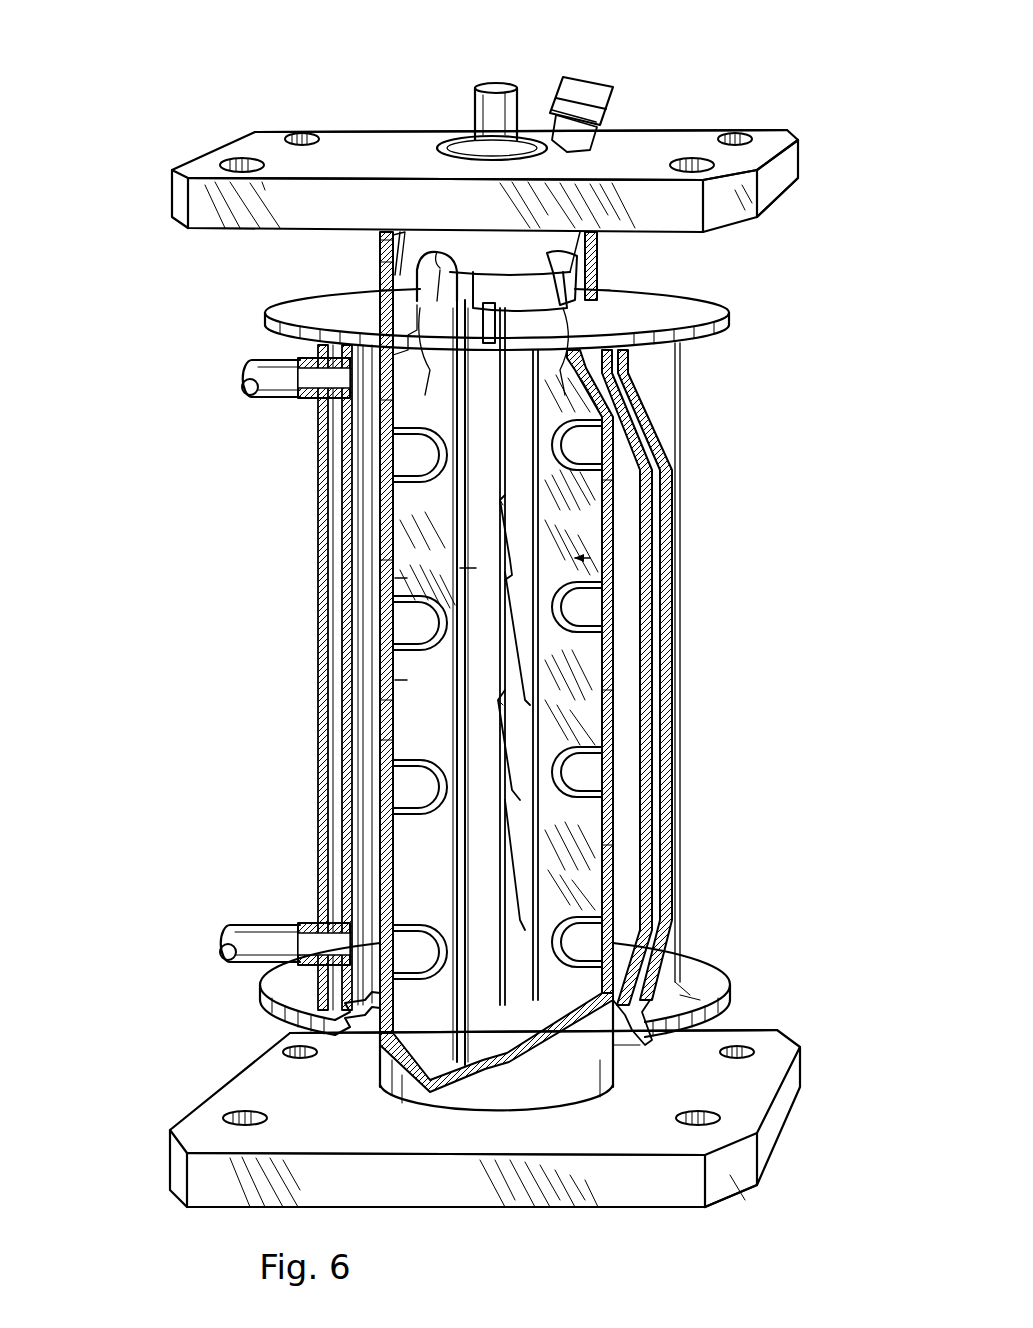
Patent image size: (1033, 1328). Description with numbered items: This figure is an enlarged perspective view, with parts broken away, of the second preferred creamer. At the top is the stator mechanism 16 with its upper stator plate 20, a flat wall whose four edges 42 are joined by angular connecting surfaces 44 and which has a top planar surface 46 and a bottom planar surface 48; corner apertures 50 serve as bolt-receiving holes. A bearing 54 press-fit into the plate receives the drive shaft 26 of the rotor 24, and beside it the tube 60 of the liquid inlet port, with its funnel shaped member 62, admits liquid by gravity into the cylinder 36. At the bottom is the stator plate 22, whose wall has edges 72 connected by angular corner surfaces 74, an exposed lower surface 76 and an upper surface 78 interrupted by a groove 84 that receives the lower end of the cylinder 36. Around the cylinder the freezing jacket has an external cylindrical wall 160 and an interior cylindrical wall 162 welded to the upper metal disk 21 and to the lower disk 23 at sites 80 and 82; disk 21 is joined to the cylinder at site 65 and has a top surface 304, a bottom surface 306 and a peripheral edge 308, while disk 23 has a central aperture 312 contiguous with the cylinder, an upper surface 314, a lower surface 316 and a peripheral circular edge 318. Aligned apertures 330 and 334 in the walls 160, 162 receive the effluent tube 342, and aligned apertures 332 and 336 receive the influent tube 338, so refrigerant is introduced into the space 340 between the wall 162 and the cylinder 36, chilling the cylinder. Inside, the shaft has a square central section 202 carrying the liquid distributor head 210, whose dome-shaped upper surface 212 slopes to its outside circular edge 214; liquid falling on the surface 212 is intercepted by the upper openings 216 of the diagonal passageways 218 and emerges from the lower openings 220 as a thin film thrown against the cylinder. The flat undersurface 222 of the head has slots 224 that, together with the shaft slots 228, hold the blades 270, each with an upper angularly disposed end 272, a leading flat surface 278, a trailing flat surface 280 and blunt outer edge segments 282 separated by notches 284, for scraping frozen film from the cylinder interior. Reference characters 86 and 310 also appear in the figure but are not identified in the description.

The stator mechanism 16 is at (385, 125).
The upper stator plate 20 is at (640, 122).
The upper metal disk 21 is at (262, 313).
The bottom stator plate 22 is at (810, 1150).
The lower metal annular disk 23 is at (258, 992).
The rotor 24 is at (365, 715).
The drive shaft 26 is at (478, 100).
The cylinder 36 is at (252, 684).
The edges 42 is at (665, 130).
The angular connecting surface 44 is at (795, 135).
The top planar surface 46 is at (695, 145).
The bottom planar surface 48 is at (760, 210).
The corner apertures 50 is at (755, 140).
The bearing 54 is at (528, 88).
The tube 60 is at (552, 78).
The funnel shaped member 62 is at (581, 114).
The connection site 65 is at (610, 290).
The edges 72 is at (790, 1040).
The angular corner surfaces 74 is at (800, 1050).
The exposed lower surface 76 is at (660, 1210).
The upper surface 78 is at (600, 1087).
The welding site 80 is at (255, 990).
The welding site 82 is at (370, 1040).
The groove 84 is at (470, 1112).
The mounting holes 86 is at (235, 1050).
The external cylindrical wall 160 is at (318, 520).
The interior cylindrical wall 162 is at (345, 545).
The central shaft section 202 is at (491, 682).
The liquid distributor head 210 is at (380, 248).
The upper dome-shaped surface 212 is at (487, 253).
The outside circular edge 214 is at (520, 291).
The upper openings 216 is at (428, 238).
The diagonal passageways 218 is at (380, 262).
The effluent lower opening 220 is at (485, 354).
The undersurface 222 is at (380, 290).
The slots 224 is at (455, 260).
The blade-receiving slot 228 is at (495, 495).
The blade 270 is at (390, 578).
The upper angularly disposed end 272 is at (492, 320).
The leading flat surface 278 is at (565, 675).
The trailing flat surface 280 is at (427, 615).
The outer edge segments 282 is at (395, 420).
The notch 284 is at (390, 455).
The top surface 304 is at (650, 312).
The bottom surface 306 is at (690, 355).
The peripheral edge 308 is at (690, 345).
The right inner tube 310 is at (700, 980).
The central aperture 312 is at (680, 960).
The upper surface 314 is at (675, 988).
The lower surface 316 is at (730, 1010).
The peripheral circular edge 318 is at (715, 995).
The upper aperture 330 is at (262, 362).
The lower aperture 332 is at (330, 915).
The top aperture 334 is at (350, 380).
The lower aperture 336 is at (395, 872).
The influent tube 338 is at (225, 940).
The space 340 is at (345, 840).
The effluent tube 342 is at (248, 392).